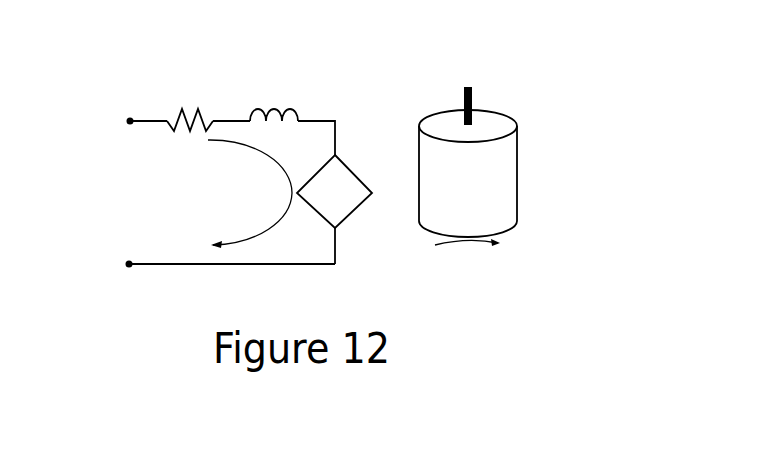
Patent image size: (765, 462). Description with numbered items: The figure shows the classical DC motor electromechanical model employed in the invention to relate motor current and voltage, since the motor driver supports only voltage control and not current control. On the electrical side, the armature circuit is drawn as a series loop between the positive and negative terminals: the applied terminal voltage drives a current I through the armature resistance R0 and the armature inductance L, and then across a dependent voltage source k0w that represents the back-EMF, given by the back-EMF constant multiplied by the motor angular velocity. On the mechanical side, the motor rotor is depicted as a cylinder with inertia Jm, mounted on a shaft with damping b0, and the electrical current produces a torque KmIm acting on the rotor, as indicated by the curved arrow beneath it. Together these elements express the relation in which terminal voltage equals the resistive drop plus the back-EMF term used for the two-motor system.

The electrical resistance of the armature R0 is at (190, 104).
The armature inductance L is at (274, 99).
The back-EMF voltage k0w is at (334, 203).
The current I is at (245, 194).
The motor rotor inertia Jm is at (468, 173).
The motor shaft damping b0 is at (481, 113).
The motor torque KmIm is at (467, 261).